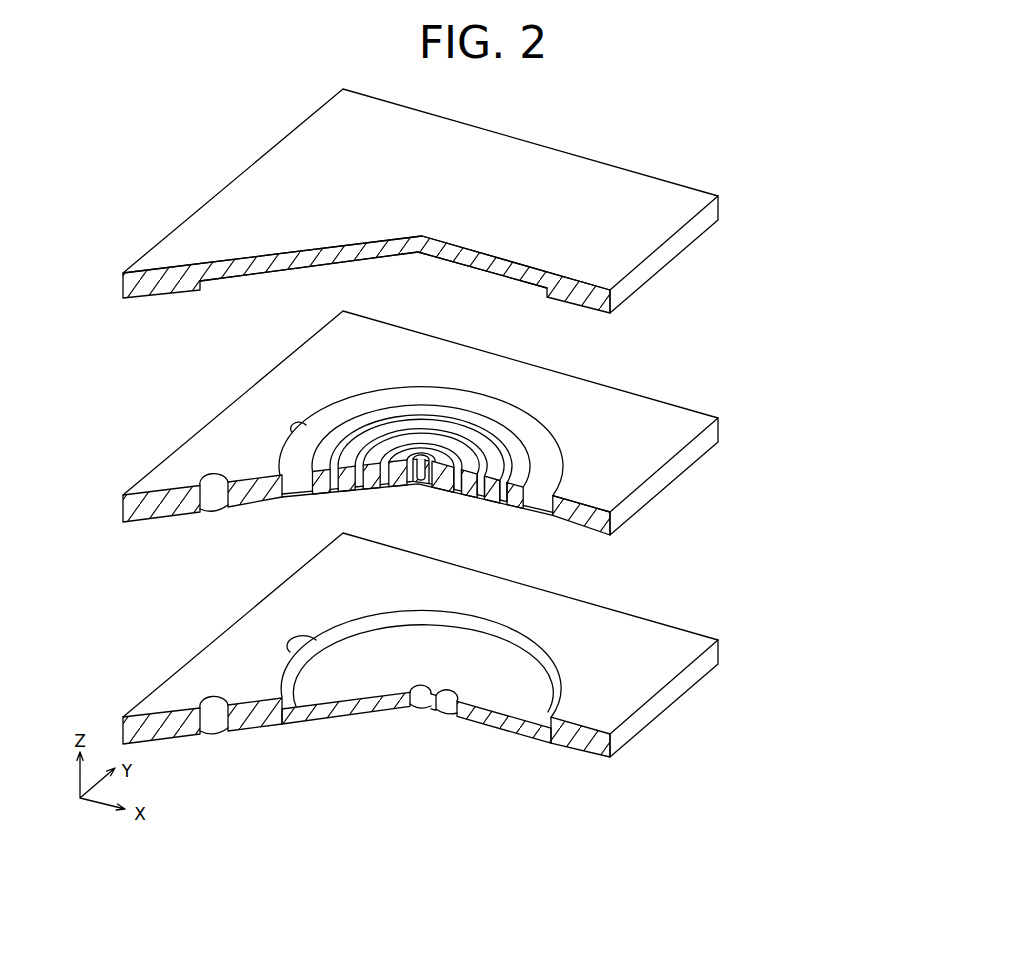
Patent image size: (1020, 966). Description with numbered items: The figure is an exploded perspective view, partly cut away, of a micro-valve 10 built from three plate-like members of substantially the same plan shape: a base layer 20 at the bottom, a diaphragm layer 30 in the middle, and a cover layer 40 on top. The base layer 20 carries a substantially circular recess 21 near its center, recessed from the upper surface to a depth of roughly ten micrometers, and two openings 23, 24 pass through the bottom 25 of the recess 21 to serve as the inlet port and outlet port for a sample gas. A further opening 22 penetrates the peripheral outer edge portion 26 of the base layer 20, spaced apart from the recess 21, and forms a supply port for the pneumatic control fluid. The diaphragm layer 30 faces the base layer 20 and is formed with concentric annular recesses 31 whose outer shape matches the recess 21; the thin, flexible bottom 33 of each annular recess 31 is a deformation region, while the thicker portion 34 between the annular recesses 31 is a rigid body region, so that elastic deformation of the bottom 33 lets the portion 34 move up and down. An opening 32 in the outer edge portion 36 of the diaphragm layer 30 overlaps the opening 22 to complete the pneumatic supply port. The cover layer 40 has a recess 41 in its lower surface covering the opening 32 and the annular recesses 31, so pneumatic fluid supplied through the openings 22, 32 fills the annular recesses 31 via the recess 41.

The micro-valve 10 is at (627, 111).
The base layer 20 is at (678, 620).
The recess 21 is at (292, 650).
The opening 22 is at (207, 728).
The opening 23 is at (423, 702).
The opening 24 is at (452, 710).
The bottom 25 is at (514, 690).
The peripheral outer edge portion 26 is at (636, 684).
The diaphragm layer 30 is at (678, 398).
The annular recess 31 is at (290, 430).
The opening 32 is at (205, 483).
The bottom (deformation region) 33 is at (527, 513).
The portion between annular recesses (rigid body region) 34 is at (520, 445).
The outer edge portion 36 is at (636, 463).
The cover layer 40 is at (678, 176).
The recess 41 is at (471, 273).